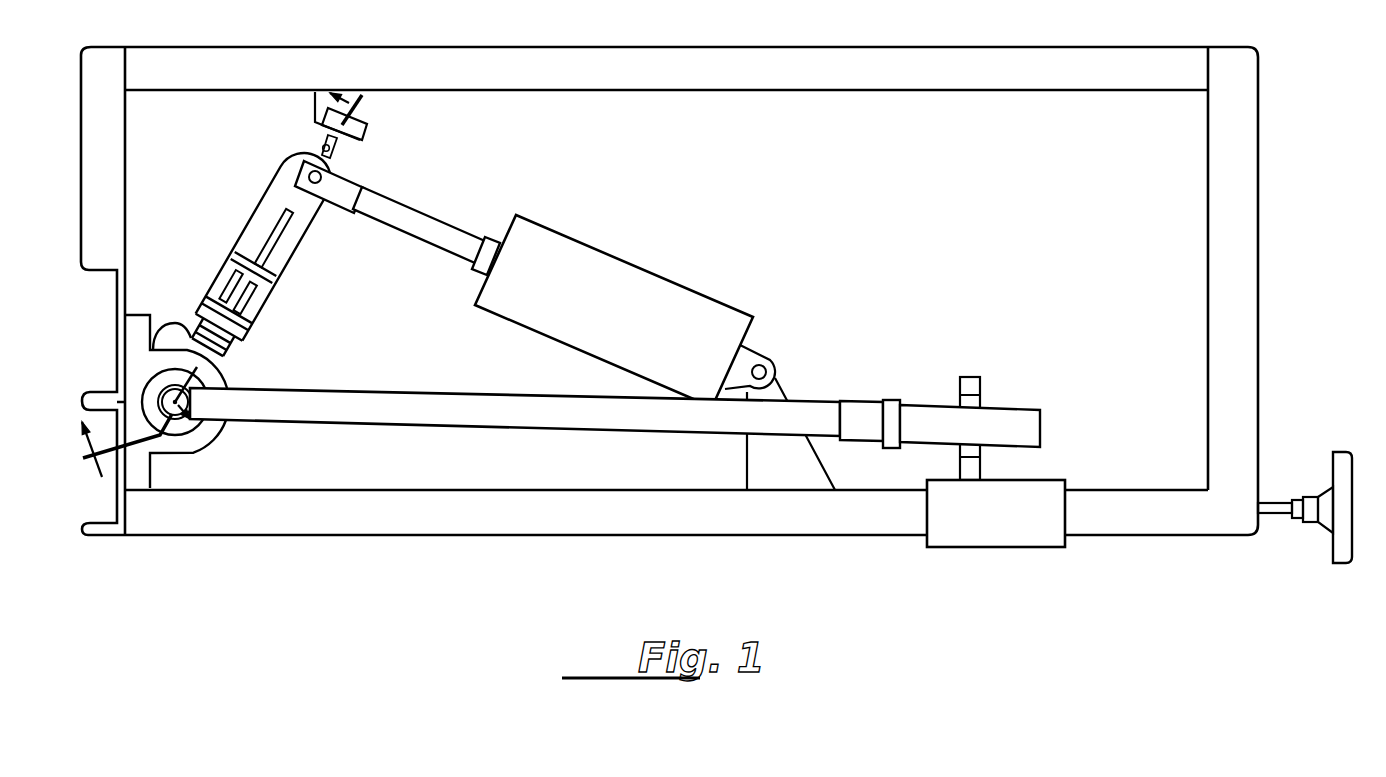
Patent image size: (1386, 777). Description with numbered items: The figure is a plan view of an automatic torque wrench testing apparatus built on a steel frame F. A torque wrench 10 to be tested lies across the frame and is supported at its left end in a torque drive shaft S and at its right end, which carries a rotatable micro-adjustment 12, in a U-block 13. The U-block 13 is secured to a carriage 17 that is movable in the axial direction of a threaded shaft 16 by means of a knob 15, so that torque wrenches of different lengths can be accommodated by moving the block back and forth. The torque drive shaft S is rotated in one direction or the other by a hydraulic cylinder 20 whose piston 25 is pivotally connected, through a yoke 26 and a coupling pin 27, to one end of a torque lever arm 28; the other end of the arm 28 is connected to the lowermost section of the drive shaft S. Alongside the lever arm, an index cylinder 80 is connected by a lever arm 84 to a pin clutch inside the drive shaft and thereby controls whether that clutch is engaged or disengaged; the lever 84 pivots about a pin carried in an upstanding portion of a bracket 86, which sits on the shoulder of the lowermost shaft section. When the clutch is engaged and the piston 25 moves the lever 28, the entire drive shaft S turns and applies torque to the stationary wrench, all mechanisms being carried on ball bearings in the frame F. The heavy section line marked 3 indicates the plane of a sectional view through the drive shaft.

The steel frame F is at (1240, 233).
The torque drive shaft S is at (195, 415).
The section line 3- 3 is at (242, 298).
The torque wrench 10 is at (375, 405).
The rotatable micro-adjustment 12 is at (1005, 420).
The U-block 13 is at (973, 388).
The knob 15 is at (1340, 467).
The threaded shaft 16 is at (1278, 507).
The carriage 17 is at (1038, 498).
The hydraulic cylinder 20 is at (638, 303).
The piston 25 is at (433, 230).
The yoke 26 is at (343, 192).
The coupling pin 27 is at (321, 176).
The torque lever arm 28 is at (268, 218).
The index cylinder 80 is at (257, 316).
The lever arm 84 is at (237, 348).
The bracket 86 is at (175, 338).